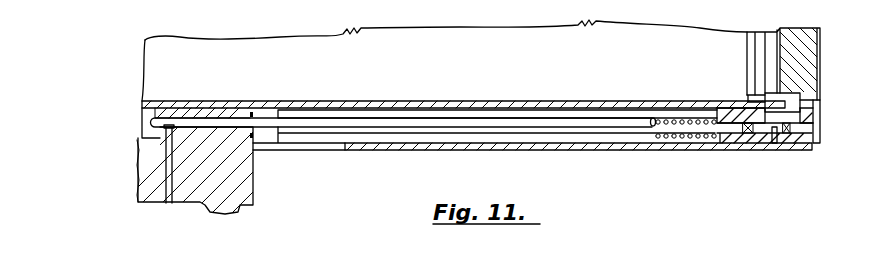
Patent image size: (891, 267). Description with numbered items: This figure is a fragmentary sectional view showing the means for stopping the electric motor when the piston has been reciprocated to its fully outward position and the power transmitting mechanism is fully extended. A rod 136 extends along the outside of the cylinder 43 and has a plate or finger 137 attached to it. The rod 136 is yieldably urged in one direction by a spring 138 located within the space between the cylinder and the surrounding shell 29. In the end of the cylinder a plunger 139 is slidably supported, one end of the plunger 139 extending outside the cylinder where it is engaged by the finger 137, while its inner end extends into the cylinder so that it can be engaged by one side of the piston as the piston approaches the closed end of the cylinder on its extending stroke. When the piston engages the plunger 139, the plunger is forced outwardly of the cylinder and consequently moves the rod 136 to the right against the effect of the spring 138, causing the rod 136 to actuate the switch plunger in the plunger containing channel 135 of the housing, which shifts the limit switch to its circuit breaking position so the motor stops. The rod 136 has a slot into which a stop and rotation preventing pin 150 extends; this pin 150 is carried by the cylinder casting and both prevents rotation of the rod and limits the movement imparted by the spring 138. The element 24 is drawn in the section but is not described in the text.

The table top plate 24 is at (291, 67).
The cylinder 43 is at (410, 102).
The shell 29 is at (418, 150).
The plunger containing channel 135 is at (166, 158).
The rod 136 is at (358, 122).
The plate or finger 137 is at (822, 118).
The spring 138 is at (703, 140).
The plunger 139 is at (772, 98).
The stop and rotation preventing pin 150 is at (777, 147).